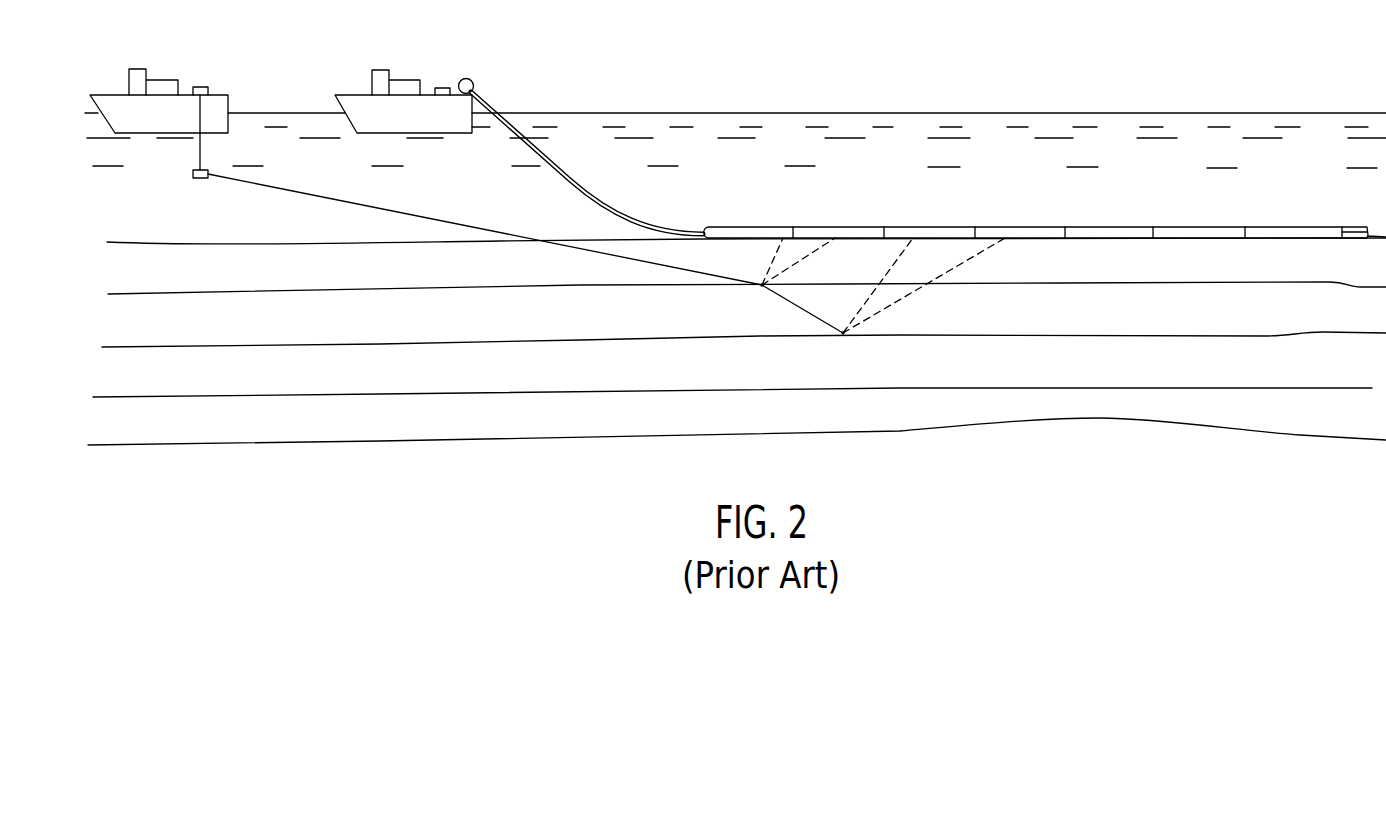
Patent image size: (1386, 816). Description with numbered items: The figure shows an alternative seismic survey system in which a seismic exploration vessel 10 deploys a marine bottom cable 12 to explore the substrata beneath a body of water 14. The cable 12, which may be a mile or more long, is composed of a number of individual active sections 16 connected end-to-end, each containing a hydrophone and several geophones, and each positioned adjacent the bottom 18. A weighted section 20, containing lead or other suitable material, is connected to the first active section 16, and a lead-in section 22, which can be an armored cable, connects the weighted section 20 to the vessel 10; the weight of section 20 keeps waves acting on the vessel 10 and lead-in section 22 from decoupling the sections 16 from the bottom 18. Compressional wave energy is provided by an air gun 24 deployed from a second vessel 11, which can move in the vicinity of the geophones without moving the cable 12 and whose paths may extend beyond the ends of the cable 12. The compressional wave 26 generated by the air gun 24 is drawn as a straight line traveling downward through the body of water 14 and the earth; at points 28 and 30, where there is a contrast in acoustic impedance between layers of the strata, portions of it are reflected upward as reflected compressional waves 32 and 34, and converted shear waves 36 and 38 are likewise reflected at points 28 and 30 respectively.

The seismic exploration vessel 10 is at (398, 80).
The vessel 11 is at (157, 75).
The marine bottom cable 12 is at (1045, 143).
The body of water 14 is at (1235, 207).
The active section 16 is at (1025, 226).
The bottom 18 is at (252, 242).
The weighted section 20 is at (745, 225).
The lead-in section 22 is at (582, 177).
The air gun 24 is at (193, 172).
The compressional wave 26 is at (353, 203).
The reflection point 28 is at (762, 285).
The reflection point 30 is at (843, 333).
The reflected compressional wave 32 is at (800, 268).
The reflected compressional wave 34 is at (978, 253).
The converted shear wave 36 is at (772, 267).
The converted shear wave 38 is at (905, 253).